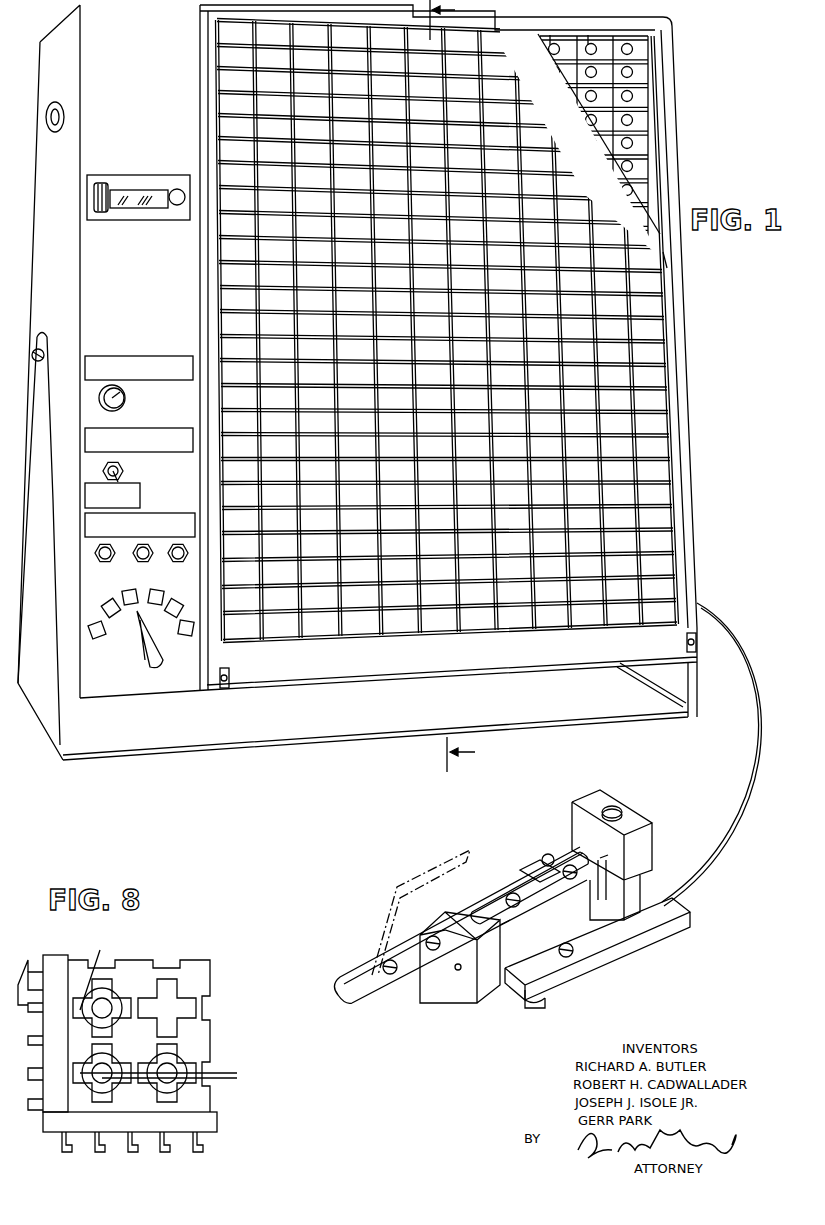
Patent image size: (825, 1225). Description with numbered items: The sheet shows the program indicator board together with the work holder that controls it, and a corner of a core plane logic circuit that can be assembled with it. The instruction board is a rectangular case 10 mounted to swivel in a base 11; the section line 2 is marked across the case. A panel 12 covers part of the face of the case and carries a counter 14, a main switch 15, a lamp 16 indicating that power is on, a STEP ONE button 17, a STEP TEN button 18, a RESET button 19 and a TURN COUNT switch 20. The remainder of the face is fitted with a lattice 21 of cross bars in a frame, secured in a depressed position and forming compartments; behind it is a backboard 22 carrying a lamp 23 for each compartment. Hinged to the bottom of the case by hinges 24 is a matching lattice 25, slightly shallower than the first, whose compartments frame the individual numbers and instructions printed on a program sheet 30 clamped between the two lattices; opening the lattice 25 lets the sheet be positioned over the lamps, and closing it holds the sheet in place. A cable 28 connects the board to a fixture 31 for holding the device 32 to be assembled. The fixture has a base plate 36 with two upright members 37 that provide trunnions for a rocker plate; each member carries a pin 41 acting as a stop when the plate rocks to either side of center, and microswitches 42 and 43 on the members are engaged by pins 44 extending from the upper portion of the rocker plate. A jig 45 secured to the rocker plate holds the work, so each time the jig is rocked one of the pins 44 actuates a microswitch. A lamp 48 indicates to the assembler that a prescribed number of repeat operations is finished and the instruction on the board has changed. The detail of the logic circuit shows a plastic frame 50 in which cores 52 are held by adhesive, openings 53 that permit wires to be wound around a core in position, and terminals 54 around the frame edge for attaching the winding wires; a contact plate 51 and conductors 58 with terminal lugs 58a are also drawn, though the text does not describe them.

In FIG. 1, the section line 2 is at (460, 386).
In FIG. 1, the rectangular case 10 is at (64, 309).
In FIG. 1, the base 11 is at (210, 750).
In FIG. 1, the panel 12 is at (85, 28).
In FIG. 1, the counter 14 is at (150, 206).
In FIG. 1, the main switch 15 is at (125, 471).
In FIG. 1, the lamp 16 is at (131, 398).
In FIG. 1, the STEP ONE button 17 is at (112, 560).
In FIG. 1, the STEP TEN button 18 is at (152, 560).
In FIG. 1, the RESET button 19 is at (186, 560).
In FIG. 1, the TURN COUNT switch 20 is at (138, 652).
In FIG. 1, the lattice 21 is at (624, 40).
In FIG. 1, the backboard 22 is at (619, 142).
In FIG. 1, the lamp 23 is at (640, 52).
In FIG. 1, the hinges 24 is at (226, 688).
In FIG. 1, the matching lattice 25 is at (668, 286).
In FIG. 1, the cable 28 is at (753, 768).
In FIG. 1, the program sheet 30 is at (603, 187).
In FIG. 1, the fixture 31 is at (525, 924).
In FIG. 1, the device 32 is at (372, 925).
In FIG. 1, the base plate 36 is at (670, 914).
In FIG. 1, the upright members 37 is at (540, 855).
In FIG. 1, the pin 41 is at (543, 858).
In FIG. 1, the microswitch 42 is at (606, 855).
In FIG. 1, the microswitch 43 is at (462, 915).
In FIG. 1, the pins 44 is at (500, 930).
In FIG. 1, the jig 45 is at (555, 893).
In FIG. 1, the lamp 48 is at (622, 808).
In FIG. 8, the plastic frame 50 is at (58, 965).
In FIG. 8, the conductor plate 51 is at (180, 1004).
In FIG. 8, the core 52 is at (102, 978).
In FIG. 8, the openings 53 is at (167, 980).
In FIG. 8, the terminals 54 is at (36, 968).
In FIG. 8, the conductor 58 is at (226, 1064).
In FIG. 8, the terminal lug 58a is at (36, 1082).